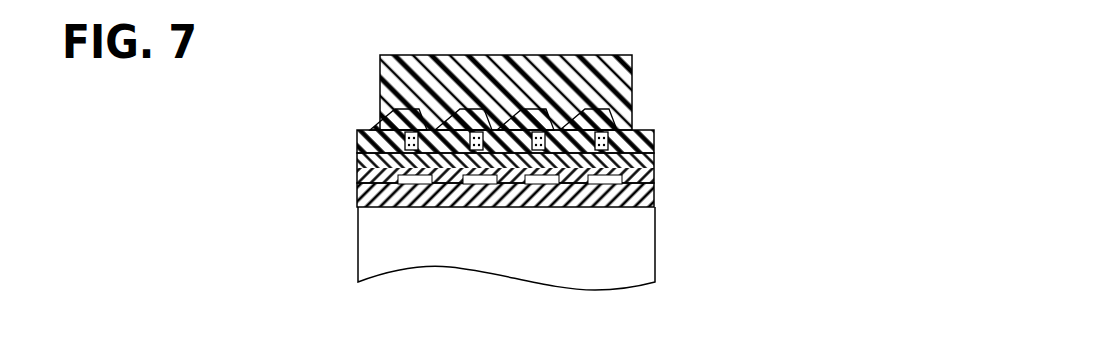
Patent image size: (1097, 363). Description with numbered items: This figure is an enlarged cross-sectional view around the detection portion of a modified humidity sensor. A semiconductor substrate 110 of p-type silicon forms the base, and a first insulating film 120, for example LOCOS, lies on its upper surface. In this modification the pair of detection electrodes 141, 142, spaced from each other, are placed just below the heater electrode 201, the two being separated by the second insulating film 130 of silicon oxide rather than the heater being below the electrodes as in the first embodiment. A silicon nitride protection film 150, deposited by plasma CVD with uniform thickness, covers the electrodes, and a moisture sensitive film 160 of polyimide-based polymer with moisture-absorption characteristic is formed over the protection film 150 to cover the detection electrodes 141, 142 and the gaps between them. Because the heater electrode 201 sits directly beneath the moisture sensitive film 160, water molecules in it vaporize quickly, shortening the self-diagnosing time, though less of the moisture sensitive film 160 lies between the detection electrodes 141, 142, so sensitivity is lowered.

The semiconductor substrate 110 is at (640, 245).
The first insulating film 120 is at (655, 193).
The second insulating film 130 is at (655, 170).
The detection electrode 141 is at (403, 185).
The detection electrode 142 is at (475, 185).
The protection film 150 is at (640, 150).
The moisture sensitive film 160 is at (632, 85).
The heater electrode 201 is at (380, 137).